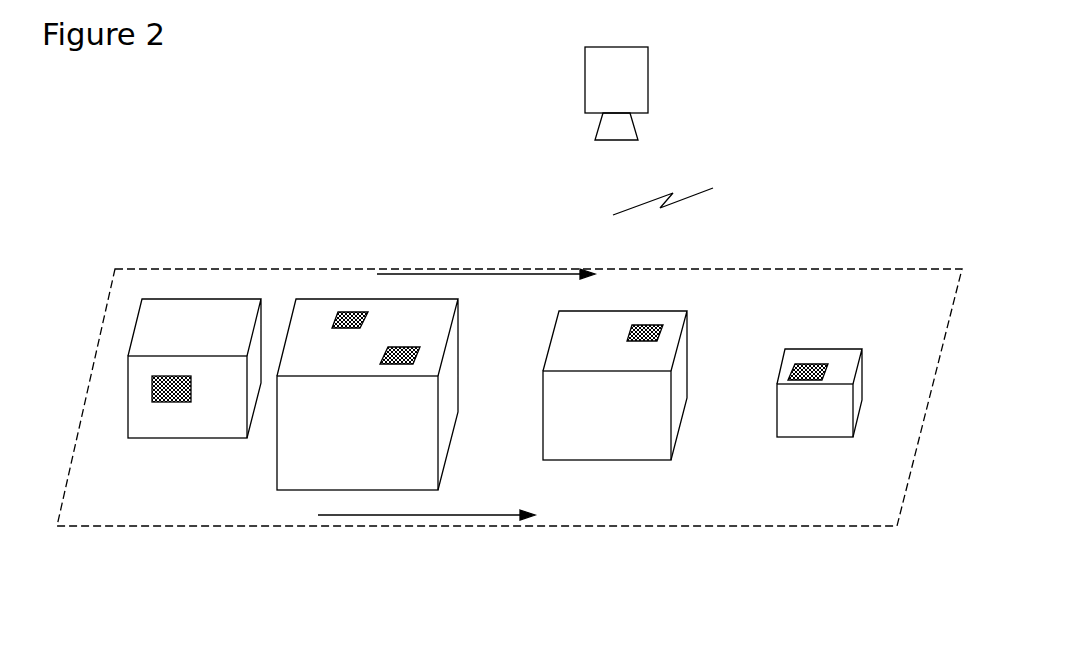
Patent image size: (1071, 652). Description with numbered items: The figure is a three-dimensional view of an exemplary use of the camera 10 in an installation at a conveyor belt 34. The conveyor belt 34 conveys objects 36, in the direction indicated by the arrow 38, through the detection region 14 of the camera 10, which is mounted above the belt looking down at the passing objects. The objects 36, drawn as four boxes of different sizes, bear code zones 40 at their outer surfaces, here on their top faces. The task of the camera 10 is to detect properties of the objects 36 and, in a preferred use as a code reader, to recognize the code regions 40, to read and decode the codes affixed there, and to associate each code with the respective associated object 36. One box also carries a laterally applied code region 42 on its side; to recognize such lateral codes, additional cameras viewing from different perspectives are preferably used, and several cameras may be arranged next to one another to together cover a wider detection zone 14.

The camera 10 is at (635, 85).
The detection region 14 is at (691, 191).
The conveyor belt 34 is at (865, 527).
The objects 36 is at (153, 315).
The arrow 38 is at (407, 517).
The code zones 40 is at (397, 348).
The laterally applied code regions 42 is at (165, 393).